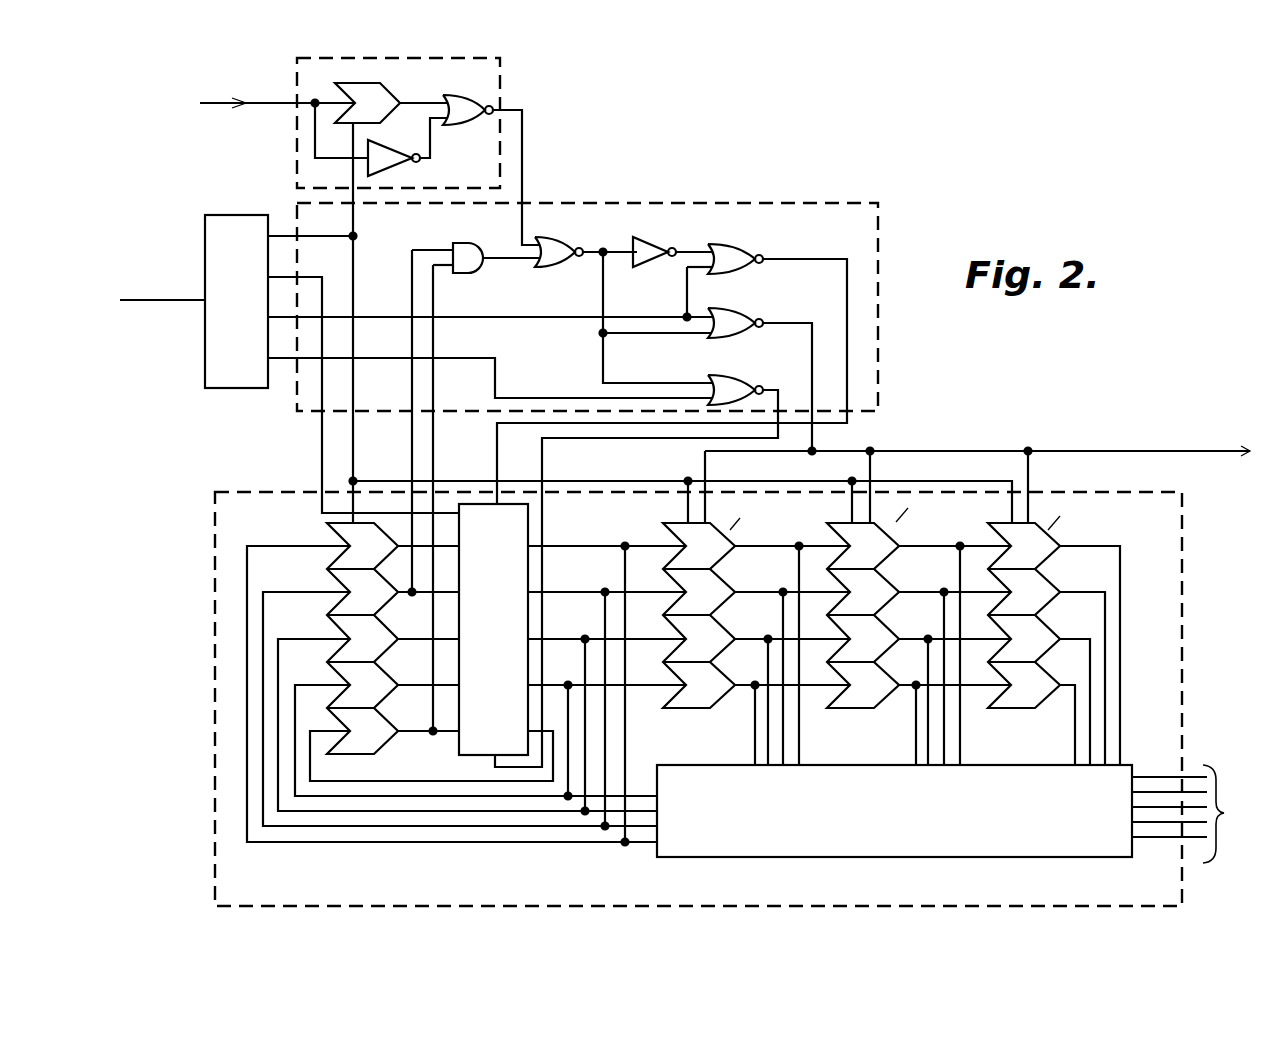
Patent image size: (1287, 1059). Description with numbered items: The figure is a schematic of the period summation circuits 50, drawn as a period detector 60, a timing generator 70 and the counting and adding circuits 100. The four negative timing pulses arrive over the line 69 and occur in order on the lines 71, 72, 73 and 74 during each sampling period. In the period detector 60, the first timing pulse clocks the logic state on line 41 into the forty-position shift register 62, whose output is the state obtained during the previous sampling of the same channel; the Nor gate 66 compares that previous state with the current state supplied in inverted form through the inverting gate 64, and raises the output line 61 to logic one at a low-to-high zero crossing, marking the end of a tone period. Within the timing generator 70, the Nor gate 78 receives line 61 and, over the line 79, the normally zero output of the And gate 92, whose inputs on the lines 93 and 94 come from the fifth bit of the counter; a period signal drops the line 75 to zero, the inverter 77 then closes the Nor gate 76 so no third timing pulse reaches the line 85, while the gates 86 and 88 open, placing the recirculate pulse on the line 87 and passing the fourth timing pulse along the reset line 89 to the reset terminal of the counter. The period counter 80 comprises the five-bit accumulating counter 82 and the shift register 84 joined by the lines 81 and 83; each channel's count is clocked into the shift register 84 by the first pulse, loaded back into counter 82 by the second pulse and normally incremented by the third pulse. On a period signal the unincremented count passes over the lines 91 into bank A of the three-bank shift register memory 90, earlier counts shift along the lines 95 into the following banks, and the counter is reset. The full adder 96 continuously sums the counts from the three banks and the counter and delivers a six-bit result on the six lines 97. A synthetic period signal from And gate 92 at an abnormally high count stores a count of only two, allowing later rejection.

The line 41 is at (266, 102).
The period summation circuits 50 is at (742, 150).
The period detector 60 is at (434, 56).
The output line 61 is at (524, 142).
The shift register 62 is at (365, 82).
The inverting gate 64 is at (405, 167).
The Nor gate 66 is at (470, 96).
The line 69 is at (176, 299).
The timing generator 70 is at (886, 256).
The line 71 is at (357, 252).
The line 72 is at (325, 302).
The line 73 is at (522, 320).
The line 74 is at (498, 386).
The line 75 is at (603, 296).
The Nor gate 76 is at (730, 244).
The inverter 77 is at (645, 240).
The Nor gate 78 is at (548, 240).
The line 79 is at (497, 250).
The period counter 80 is at (452, 767).
The lines 81 is at (247, 693).
The accumulating counter 82 is at (478, 762).
The line 83 is at (406, 734).
The shift register 84 is at (328, 536).
The line 85 is at (850, 376).
The gate 86 is at (733, 310).
The line 87 is at (985, 448).
The gate 88 is at (722, 378).
The RES line 89 is at (630, 470).
The shift register memory 90 is at (1090, 525).
The lines 91 is at (656, 690).
The And gate 92 is at (462, 274).
The line 93 is at (433, 383).
The line 94 is at (410, 438).
The lines 95 is at (823, 690).
The full adder 96 is at (1135, 765).
The lines 97 is at (1222, 814).
The counting and adding circuits 100 is at (1190, 620).